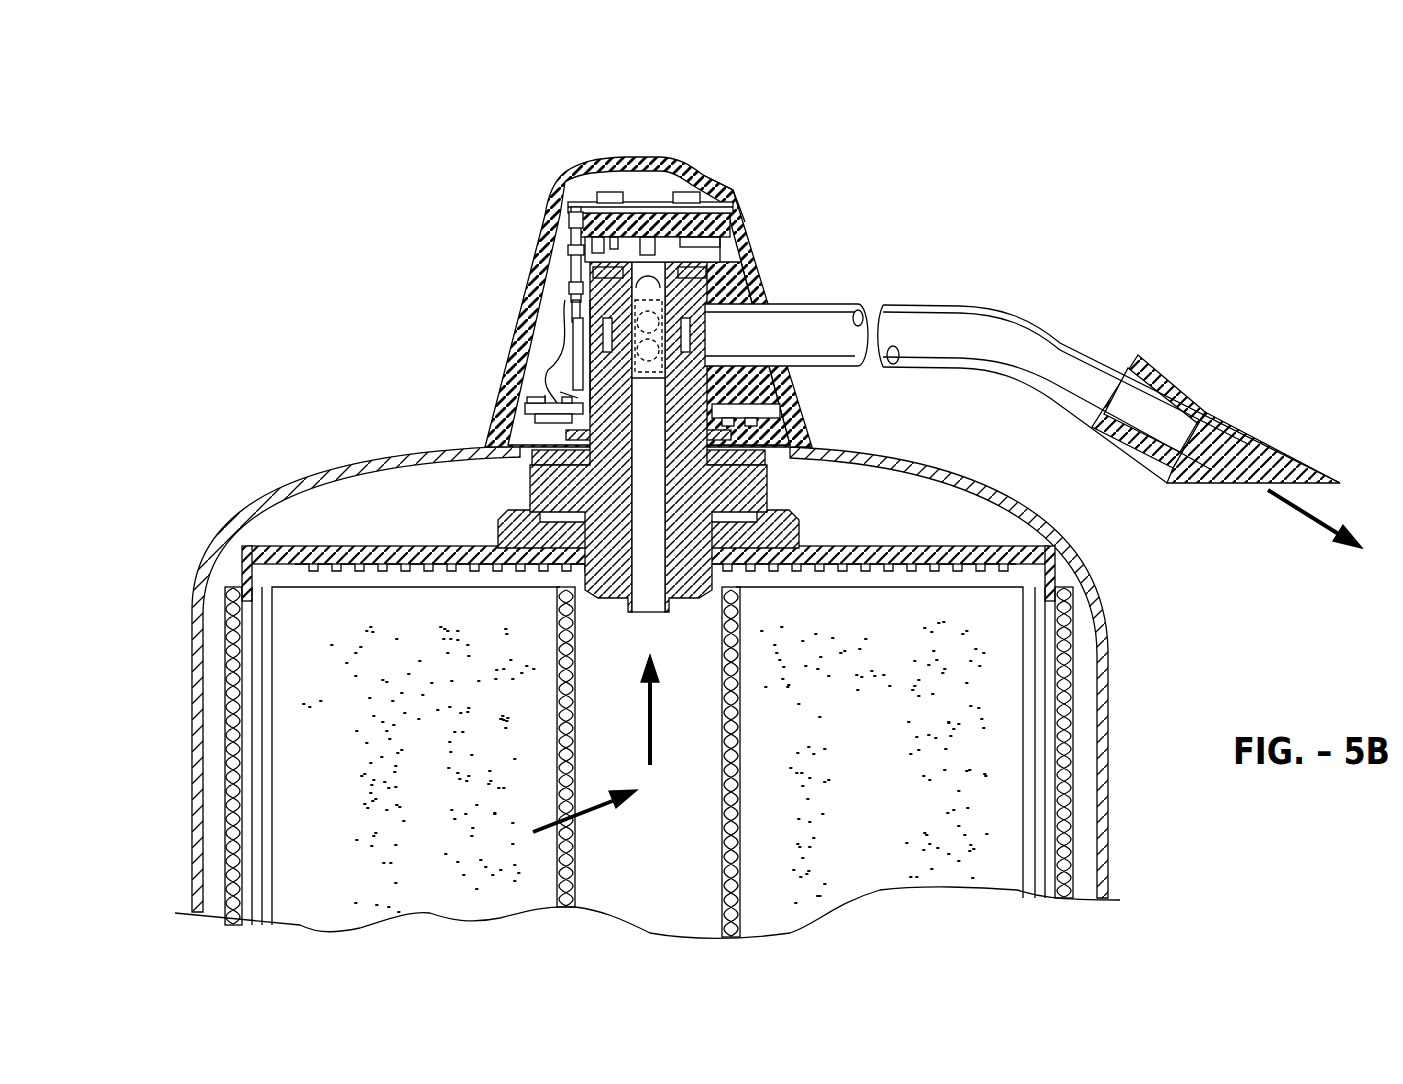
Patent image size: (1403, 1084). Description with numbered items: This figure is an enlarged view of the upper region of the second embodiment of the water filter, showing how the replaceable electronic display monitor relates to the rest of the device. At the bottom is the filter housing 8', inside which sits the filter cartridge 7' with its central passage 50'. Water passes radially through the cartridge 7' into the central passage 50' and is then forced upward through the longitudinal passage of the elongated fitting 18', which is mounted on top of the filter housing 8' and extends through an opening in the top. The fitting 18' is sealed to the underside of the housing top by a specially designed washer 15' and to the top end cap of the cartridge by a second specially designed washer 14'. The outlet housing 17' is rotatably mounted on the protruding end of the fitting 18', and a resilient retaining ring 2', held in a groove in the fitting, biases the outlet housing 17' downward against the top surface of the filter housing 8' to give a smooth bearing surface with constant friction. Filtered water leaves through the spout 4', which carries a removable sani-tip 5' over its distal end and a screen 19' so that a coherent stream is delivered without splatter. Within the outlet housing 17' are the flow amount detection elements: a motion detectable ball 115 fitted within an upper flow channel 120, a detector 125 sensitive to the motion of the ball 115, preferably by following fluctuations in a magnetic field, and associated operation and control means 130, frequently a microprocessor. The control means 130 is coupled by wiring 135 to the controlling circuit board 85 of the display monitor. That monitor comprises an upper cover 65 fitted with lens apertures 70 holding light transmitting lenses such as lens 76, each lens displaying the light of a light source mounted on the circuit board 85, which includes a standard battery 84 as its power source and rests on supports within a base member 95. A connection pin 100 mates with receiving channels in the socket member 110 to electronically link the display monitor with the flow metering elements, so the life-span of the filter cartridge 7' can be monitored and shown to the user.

The upper cover 65 is at (632, 157).
The light transmitting lens 76 is at (697, 187).
The lens aperture 70 is at (733, 188).
The battery 84 is at (610, 192).
The controlling circuit board 85 is at (585, 222).
The connection pin 100 is at (573, 233).
The resilient retaining ring 2' is at (532, 242).
The socket member 110 is at (573, 292).
The outlet housing 17' is at (495, 336).
The detector 125 is at (603, 340).
The wiring 135 is at (575, 380).
The operation and control means 130 is at (525, 404).
The washer 15' is at (573, 436).
The filter housing 8' is at (649, 679).
The fitting 18' is at (643, 437).
The washer 14' is at (566, 523).
The base member 95 is at (740, 222).
The upper flow channel 120 is at (718, 302).
The motion detectable ball 115 is at (655, 360).
The spout 4' is at (1087, 367).
The sani-tip 5' is at (1216, 393).
The screen 19' is at (1284, 503).
The filter cartridge 7' is at (648, 742).
The central passage 50' is at (600, 758).